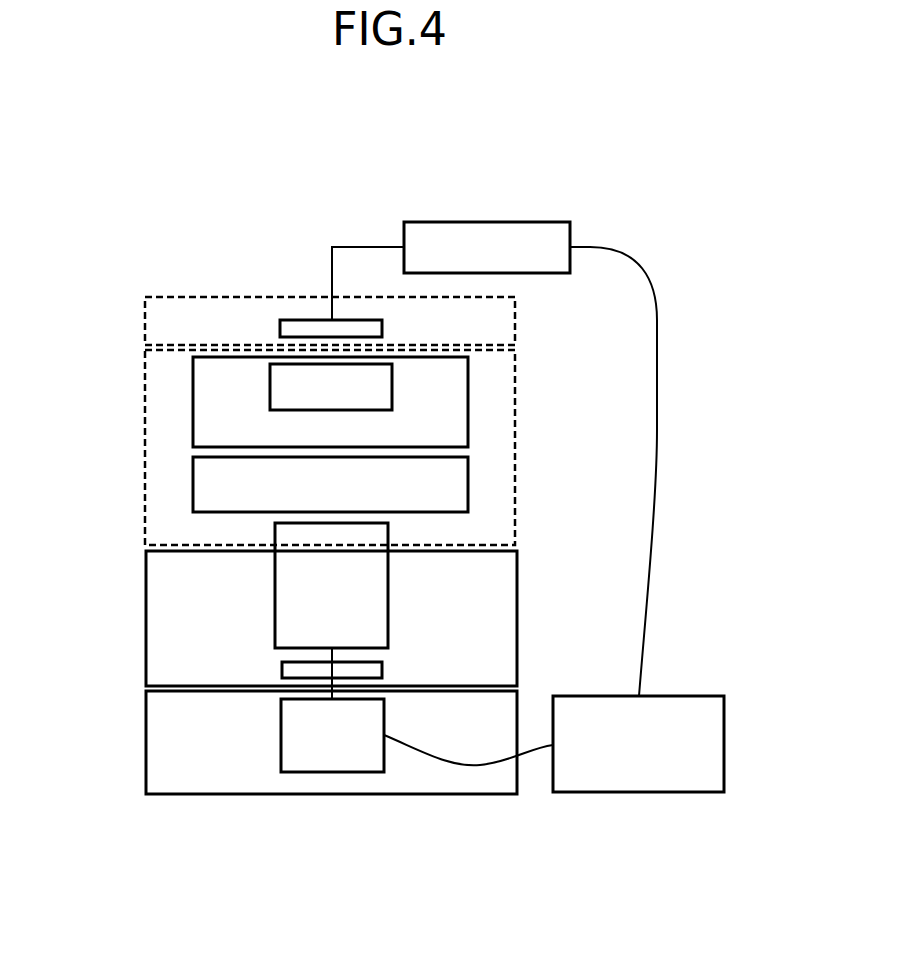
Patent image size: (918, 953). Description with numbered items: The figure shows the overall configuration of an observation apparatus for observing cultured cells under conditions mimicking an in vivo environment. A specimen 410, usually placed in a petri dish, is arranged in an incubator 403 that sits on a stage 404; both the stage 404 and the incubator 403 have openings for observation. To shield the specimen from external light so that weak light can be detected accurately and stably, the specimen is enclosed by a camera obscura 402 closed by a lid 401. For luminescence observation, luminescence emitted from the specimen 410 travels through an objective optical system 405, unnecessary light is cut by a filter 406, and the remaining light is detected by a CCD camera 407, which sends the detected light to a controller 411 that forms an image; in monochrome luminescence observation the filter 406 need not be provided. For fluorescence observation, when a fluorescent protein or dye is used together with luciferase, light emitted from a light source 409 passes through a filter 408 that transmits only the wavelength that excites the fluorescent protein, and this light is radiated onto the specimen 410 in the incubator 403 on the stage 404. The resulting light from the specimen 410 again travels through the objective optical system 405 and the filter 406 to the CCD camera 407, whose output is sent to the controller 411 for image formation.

The lid 401 is at (145, 325).
The camera obscura 402 is at (145, 368).
The incubator 403 is at (193, 405).
The stage 404 is at (193, 481).
The objective optical system 405 is at (275, 586).
The filter 406 is at (282, 672).
The CCD camera 407 is at (281, 733).
The filter 408 is at (300, 320).
The light source 409 is at (502, 222).
The specimen 410 is at (392, 386).
The controller 411 is at (724, 740).